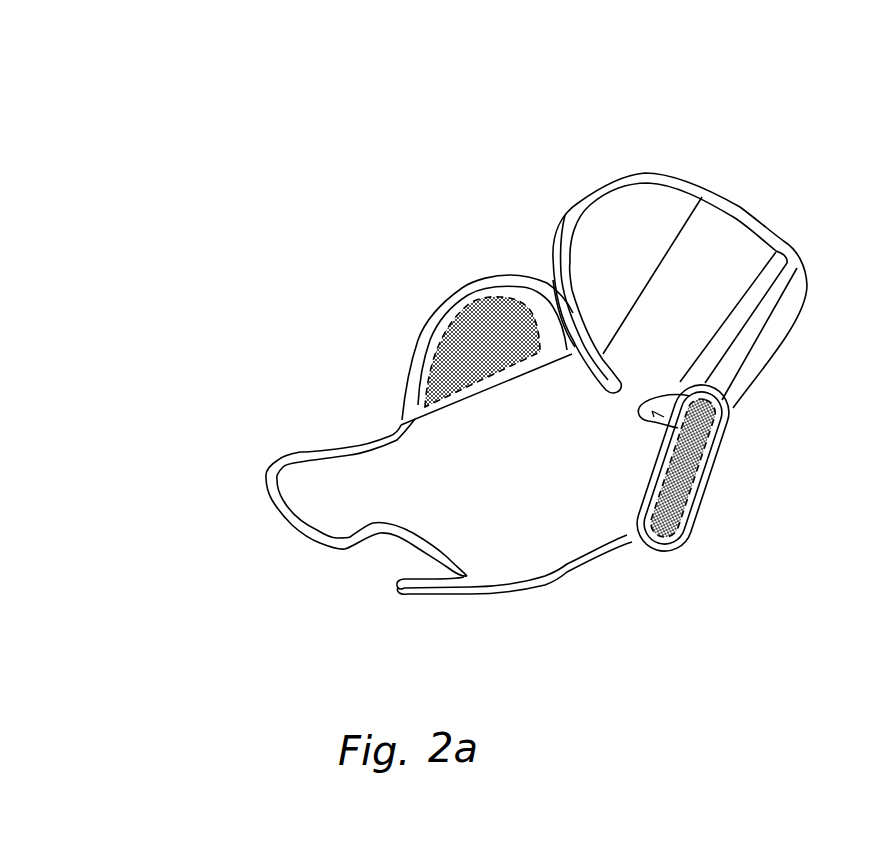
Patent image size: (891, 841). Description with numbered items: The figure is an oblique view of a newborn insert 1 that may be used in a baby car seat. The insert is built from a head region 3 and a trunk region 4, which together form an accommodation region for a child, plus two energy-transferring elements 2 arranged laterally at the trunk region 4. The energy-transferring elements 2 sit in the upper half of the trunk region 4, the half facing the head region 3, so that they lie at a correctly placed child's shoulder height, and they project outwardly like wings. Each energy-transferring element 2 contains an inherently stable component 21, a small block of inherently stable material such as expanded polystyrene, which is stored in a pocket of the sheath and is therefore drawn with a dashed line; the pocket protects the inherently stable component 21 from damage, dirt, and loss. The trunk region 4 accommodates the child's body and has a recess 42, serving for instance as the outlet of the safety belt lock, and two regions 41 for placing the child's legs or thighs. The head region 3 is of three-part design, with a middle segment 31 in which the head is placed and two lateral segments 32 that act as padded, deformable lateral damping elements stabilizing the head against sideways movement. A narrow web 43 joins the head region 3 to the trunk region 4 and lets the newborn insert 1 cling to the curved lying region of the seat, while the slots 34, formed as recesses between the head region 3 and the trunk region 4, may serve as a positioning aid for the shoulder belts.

The newborn insert 1 is at (513, 163).
The energy-transferring element 2 is at (420, 315).
The inherently stable component 21 is at (461, 292).
The head region 3 is at (745, 248).
The middle segment 31 is at (692, 300).
The lateral segment 32 is at (620, 223).
The slot 34 is at (550, 317).
The trunk region 4 is at (530, 522).
The region for placing the child's legs or thighs 41 is at (313, 493).
The recess 42 is at (393, 545).
The web 43 is at (612, 396).